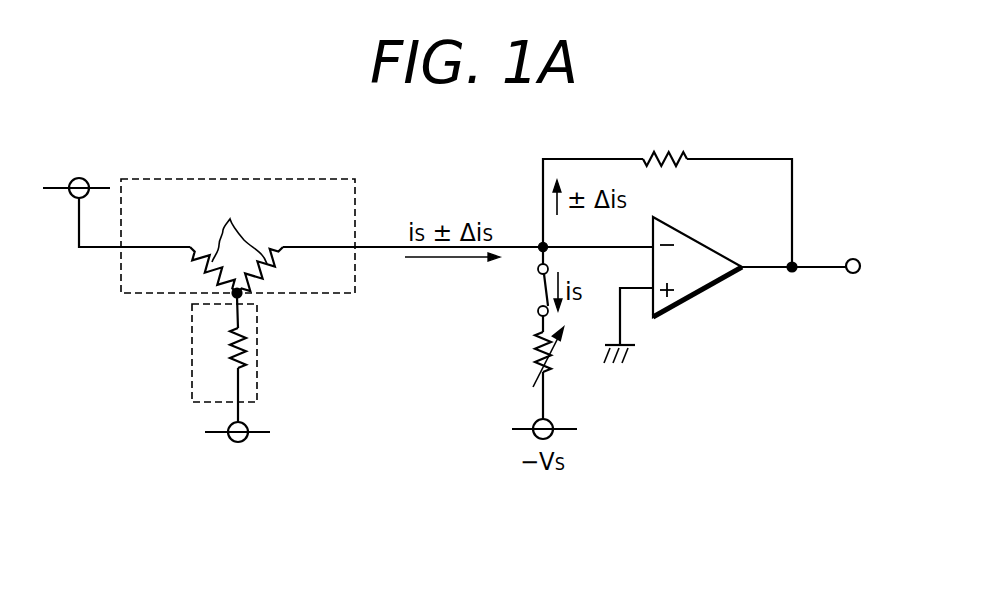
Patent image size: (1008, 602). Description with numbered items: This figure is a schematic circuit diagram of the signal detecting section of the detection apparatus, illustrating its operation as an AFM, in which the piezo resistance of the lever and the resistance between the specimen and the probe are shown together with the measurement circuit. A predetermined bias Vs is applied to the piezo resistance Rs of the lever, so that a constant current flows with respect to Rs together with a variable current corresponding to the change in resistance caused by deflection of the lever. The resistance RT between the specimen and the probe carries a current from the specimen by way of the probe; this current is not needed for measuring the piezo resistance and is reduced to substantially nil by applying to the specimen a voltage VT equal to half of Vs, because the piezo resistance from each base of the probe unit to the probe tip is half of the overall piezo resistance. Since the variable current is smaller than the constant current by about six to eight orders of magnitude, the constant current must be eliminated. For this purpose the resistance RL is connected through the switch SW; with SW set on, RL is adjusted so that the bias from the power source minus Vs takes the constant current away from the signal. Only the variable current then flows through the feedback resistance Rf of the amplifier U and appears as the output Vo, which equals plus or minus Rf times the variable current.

The bias Vs is at (116, 197).
The piezo resistance Rs is at (241, 207).
The resistance between the specimen and the probe RT is at (272, 328).
The voltage applied to the specimen VT is at (239, 450).
The feedback resistance Rf is at (667, 192).
The switch SW is at (519, 283).
The resistance RL is at (532, 367).
The operational amplifier U is at (673, 290).
The output Vo is at (829, 302).